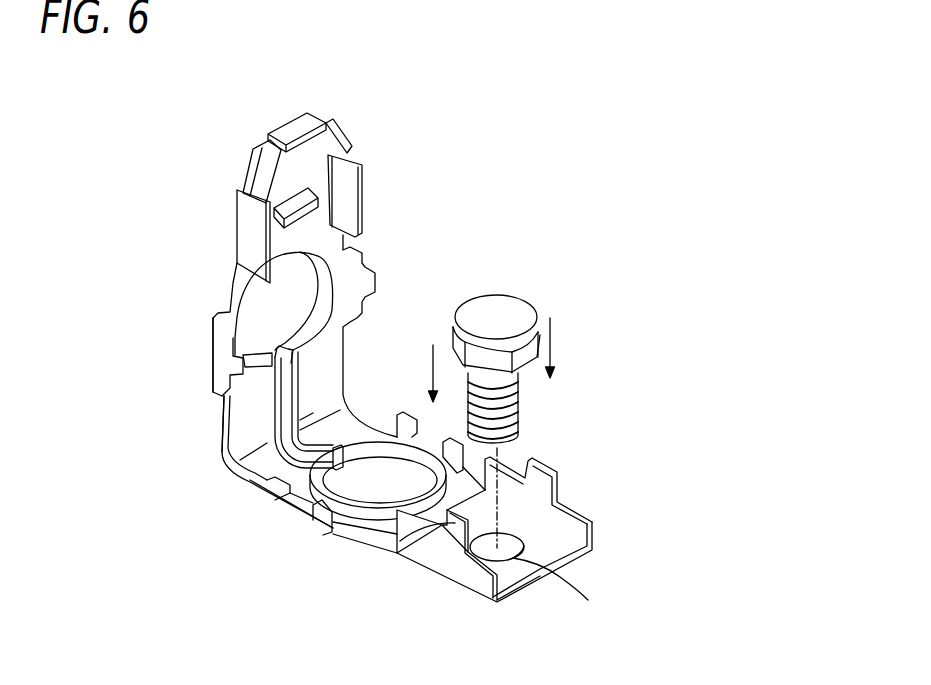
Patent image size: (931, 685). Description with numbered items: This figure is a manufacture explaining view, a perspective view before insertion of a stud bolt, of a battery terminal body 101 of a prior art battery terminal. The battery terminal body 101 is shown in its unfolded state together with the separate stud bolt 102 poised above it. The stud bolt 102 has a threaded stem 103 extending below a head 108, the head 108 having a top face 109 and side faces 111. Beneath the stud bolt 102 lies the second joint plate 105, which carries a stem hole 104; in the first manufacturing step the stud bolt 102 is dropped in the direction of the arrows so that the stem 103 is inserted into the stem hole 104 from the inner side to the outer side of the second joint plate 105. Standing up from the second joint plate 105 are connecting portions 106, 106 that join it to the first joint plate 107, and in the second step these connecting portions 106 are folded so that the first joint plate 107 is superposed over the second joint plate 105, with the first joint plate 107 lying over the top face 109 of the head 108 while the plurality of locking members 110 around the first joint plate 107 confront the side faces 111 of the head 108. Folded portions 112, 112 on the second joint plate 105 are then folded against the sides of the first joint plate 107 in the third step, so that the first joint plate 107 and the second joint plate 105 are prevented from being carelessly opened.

The battery terminal body 101 is at (395, 89).
The stud bolt 102 is at (542, 384).
The stem 103 is at (520, 396).
The stem hole 104 is at (562, 568).
The second joint plate 105 is at (432, 580).
The connecting portions 106 is at (320, 398).
The first joint plate 107 is at (330, 116).
The head 108 is at (542, 312).
The top face 109 is at (507, 305).
The locking members 110 is at (255, 170).
The side faces 111 is at (484, 341).
The folded portions 112 is at (552, 468).